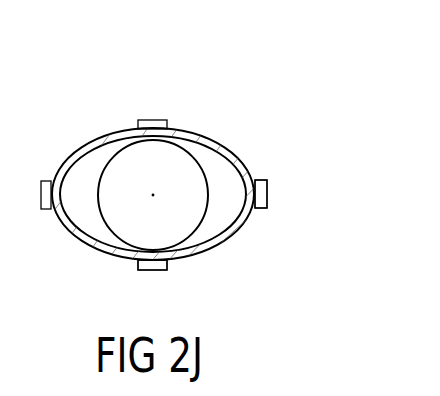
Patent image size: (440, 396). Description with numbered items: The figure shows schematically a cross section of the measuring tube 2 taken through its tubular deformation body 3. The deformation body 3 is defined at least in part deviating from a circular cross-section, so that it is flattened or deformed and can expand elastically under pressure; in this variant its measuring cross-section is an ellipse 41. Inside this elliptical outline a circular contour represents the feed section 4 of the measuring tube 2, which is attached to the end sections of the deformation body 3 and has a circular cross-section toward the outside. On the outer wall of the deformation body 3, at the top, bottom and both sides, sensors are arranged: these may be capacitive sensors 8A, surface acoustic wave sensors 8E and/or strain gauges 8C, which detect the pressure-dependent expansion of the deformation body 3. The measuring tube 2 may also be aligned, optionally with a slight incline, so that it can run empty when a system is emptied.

The measuring tube 2 is at (205, 103).
The deformation body 3 is at (240, 157).
The feed section 4 is at (106, 223).
The ellipse 41 is at (240, 229).
The capacitive sensor 8A is at (48, 182).
The surface acoustic wave sensor 8E is at (152, 265).
The strain gauge 8C is at (261, 194).